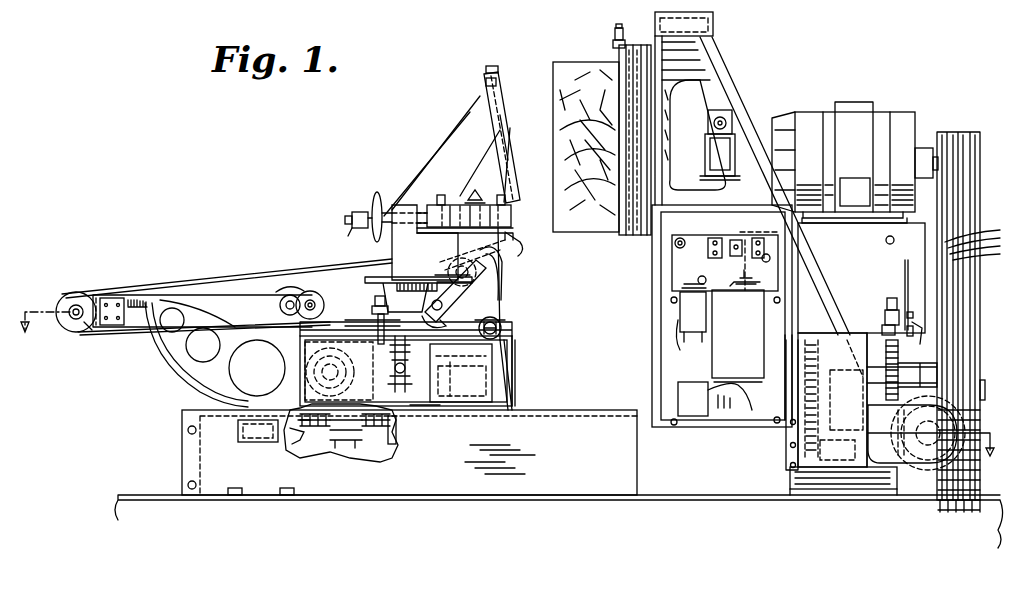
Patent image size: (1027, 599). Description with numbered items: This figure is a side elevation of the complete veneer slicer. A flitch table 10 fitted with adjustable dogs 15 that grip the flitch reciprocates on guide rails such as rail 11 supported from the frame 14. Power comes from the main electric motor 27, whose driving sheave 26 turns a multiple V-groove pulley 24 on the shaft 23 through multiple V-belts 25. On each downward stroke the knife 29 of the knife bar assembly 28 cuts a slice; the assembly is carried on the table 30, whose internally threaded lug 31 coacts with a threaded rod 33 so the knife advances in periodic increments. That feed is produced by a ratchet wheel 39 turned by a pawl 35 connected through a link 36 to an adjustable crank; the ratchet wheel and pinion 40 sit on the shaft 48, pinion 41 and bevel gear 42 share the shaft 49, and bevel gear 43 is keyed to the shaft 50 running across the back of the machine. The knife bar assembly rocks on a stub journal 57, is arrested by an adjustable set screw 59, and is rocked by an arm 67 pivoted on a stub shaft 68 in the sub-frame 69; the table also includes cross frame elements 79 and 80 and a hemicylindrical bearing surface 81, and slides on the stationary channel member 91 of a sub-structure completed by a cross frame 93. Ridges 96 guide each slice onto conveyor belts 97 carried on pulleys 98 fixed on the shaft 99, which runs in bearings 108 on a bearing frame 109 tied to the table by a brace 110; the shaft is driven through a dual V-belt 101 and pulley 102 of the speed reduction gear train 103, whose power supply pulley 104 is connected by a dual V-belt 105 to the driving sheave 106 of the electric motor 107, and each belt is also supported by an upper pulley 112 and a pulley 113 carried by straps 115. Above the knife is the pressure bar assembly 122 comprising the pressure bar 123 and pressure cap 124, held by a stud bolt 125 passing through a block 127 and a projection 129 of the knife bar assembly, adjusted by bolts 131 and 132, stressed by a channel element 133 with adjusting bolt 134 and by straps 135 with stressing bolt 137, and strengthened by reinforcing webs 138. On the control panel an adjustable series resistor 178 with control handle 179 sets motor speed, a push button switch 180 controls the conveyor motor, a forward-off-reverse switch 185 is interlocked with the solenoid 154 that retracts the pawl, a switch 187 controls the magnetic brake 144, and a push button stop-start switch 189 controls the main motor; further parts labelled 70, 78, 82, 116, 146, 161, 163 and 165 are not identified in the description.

The flitch table 10 is at (628, 235).
The guide rail 11 is at (652, 304).
The frame 14 is at (712, 50).
The adjustable dogs 15 is at (613, 44).
The shaft 23 is at (988, 390).
The multiple V-groove pulley 24 is at (982, 343).
The multiple V-belts 25 is at (980, 244).
The driving sheave 26 is at (982, 140).
The main electric motor 27 is at (905, 112).
The knife bar assembly 28 is at (498, 258).
The knife 29 is at (508, 248).
The table 30 is at (548, 348).
The internally threaded lug 31 is at (366, 446).
The threaded rod 33 is at (298, 438).
The pawl 35 is at (884, 325).
The link 36 is at (916, 326).
The ratchet wheel 39 is at (886, 345).
The pinion 40 is at (822, 334).
The pinion 41 is at (808, 470).
The bevel gear 42 is at (905, 470).
The bevel gear 43 is at (975, 424).
The shaft 48 is at (832, 400).
The common shaft 49 is at (837, 452).
The common shaft 50 is at (918, 470).
The stub journal 57 is at (504, 330).
The adjustable set screw 59 is at (380, 290).
The arm 67 is at (470, 348).
The stub shaft 68 is at (462, 381).
The sub-frame 69 is at (514, 392).
The rod 70 is at (396, 366).
The shaft 78 is at (500, 322).
The cross frame element 79 is at (398, 416).
The cross frame element 80 is at (420, 408).
The hemicylindrical bearing surface 81 is at (464, 375).
The screw 82 is at (380, 302).
The channel member 91 is at (580, 490).
The cross frame 93 is at (198, 452).
The ridges 96 is at (478, 242).
The belts 97 is at (290, 280).
The pulleys 98 is at (72, 305).
The shaft 99 is at (70, 301).
The dual V-belt 101 is at (250, 290).
The pulley 102 is at (316, 300).
The speed reduction gear train 103 is at (353, 320).
The power supply pulley 104 is at (275, 310).
The dual V-belt 105 is at (257, 368).
The driving sheave 106 is at (300, 378).
The electric motor 107 is at (306, 388).
The bearings 108 is at (84, 328).
The bearing frame 109 is at (104, 298).
The brace 110 is at (200, 388).
The upper pulley 112 is at (508, 288).
The pulley 113 is at (451, 319).
The straps 115 is at (455, 291).
The slide 116 is at (440, 275).
The pressure bar assembly 122 is at (510, 166).
The pressure bar 123 is at (512, 230).
The pressure cap 124 is at (504, 126).
The stud bolt 125 is at (376, 192).
The block 127 is at (462, 205).
The integral projection 129 is at (395, 205).
The bolt 131 is at (494, 160).
The bolt 132 is at (438, 168).
The channel element 133 is at (484, 82).
The adjusting bolt 134 is at (492, 66).
The straps 135 is at (344, 241).
The stressing bolt 137 is at (348, 215).
The reinforcing webs 138 is at (438, 138).
The magnetic brake 144 is at (712, 110).
The bracket 146 is at (706, 146).
The solenoid 154 is at (890, 304).
The lamp 161 is at (682, 238).
The rod 163 is at (910, 295).
The lever 165 is at (924, 336).
The adjustable series resistor 178 is at (741, 318).
The control handle 179 is at (790, 257).
The push button switch 180 is at (758, 236).
The forward-off-reverse switch 185 is at (684, 348).
The switch 187 is at (732, 256).
The push button stop-start switch 189 is at (708, 256).